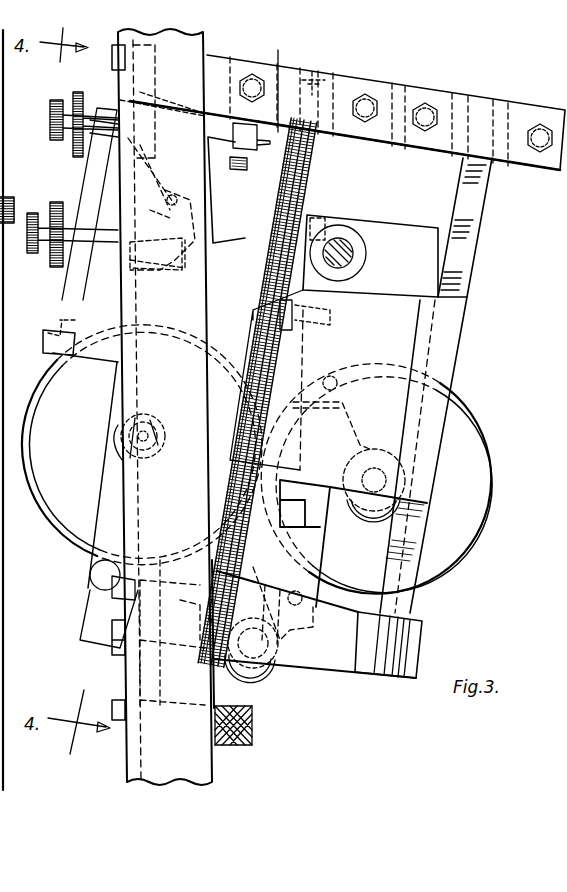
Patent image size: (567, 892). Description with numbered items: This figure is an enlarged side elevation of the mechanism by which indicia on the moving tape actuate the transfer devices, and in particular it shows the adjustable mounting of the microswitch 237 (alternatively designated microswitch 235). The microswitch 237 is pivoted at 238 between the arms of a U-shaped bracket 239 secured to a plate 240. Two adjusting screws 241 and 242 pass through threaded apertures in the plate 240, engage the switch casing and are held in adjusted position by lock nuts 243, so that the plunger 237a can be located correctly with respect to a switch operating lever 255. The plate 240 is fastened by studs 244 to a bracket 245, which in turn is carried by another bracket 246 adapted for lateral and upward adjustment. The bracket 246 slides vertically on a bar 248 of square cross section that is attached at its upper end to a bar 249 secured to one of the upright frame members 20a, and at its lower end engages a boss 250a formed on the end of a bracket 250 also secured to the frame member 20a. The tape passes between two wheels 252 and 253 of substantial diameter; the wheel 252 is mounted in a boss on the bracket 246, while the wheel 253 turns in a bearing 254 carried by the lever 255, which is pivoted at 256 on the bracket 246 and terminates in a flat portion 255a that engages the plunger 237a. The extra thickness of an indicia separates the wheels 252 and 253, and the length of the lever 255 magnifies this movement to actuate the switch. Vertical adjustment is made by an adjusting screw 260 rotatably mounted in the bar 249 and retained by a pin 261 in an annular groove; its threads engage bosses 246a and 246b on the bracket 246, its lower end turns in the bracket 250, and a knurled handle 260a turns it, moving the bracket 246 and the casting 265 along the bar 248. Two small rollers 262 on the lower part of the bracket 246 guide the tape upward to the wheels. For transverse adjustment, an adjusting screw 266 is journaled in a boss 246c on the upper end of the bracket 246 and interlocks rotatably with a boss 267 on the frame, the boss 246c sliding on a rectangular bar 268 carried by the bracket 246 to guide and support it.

The upright frame member 20a is at (203, 785).
The microswitch 235 is at (210, 186).
The microswitch 237 is at (226, 190).
The plunger 237a is at (276, 81).
The pivot 238 is at (188, 146).
The U-shaped bracket 239 is at (156, 254).
The plate 240 is at (88, 170).
The adjusting screw 241 is at (50, 111).
The adjusting screw 242 is at (52, 216).
The lock nuts 243 is at (78, 93).
The studs 244 is at (50, 330).
The bracket 245 is at (112, 358).
The bracket 246 is at (360, 295).
The boss 246a is at (300, 330).
The boss 246b is at (310, 420).
The boss 246c is at (318, 214).
The bar of square cross section 248 is at (493, 272).
The bar 249 is at (447, 100).
The bracket 250 is at (337, 657).
The boss 250a is at (425, 645).
The wheel 252 is at (478, 428).
The wheel 253 is at (50, 385).
The bearing 254 is at (122, 452).
The switch operating lever 255 is at (106, 522).
The flat portion 255a is at (292, 190).
The pivot 256 is at (98, 585).
The adjusting screw 260 is at (305, 204).
The knurled handle 260a is at (260, 737).
The pin 261 is at (320, 72).
The small rollers 262 is at (260, 662).
The casting 265 is at (400, 350).
The adjusting screw 266 is at (353, 253).
The boss 267 is at (366, 246).
The rectangular bar 268 is at (320, 520).